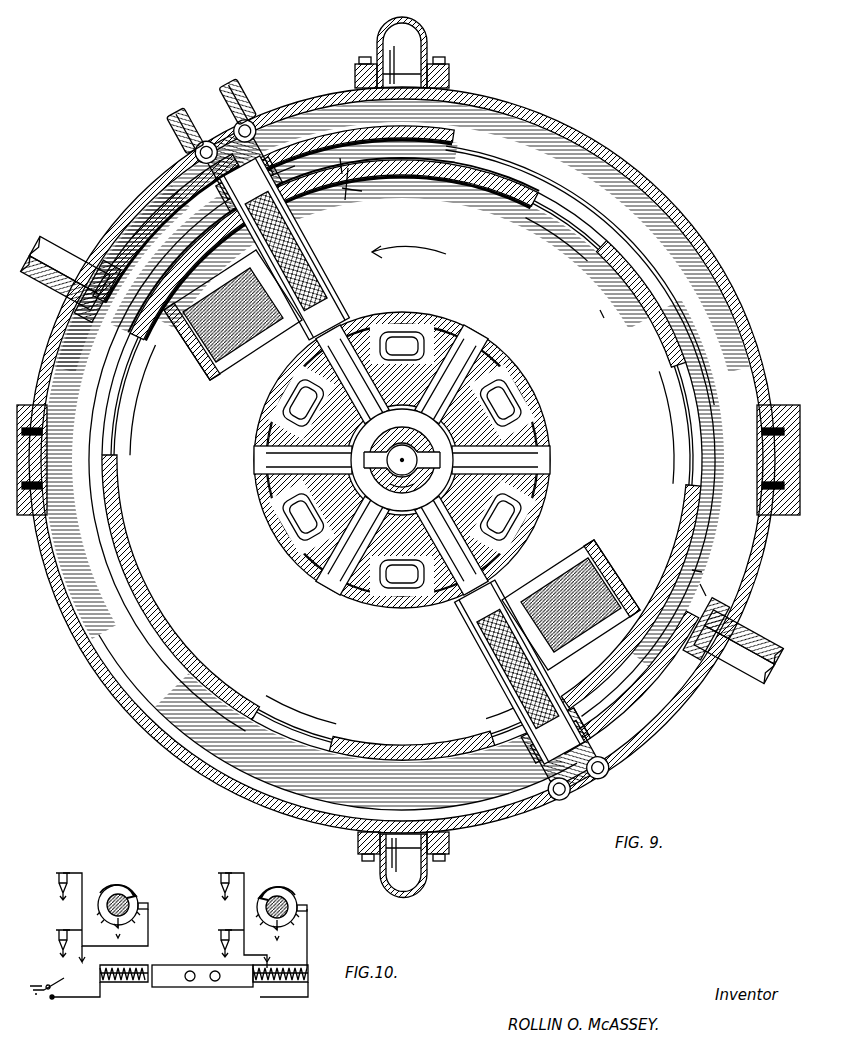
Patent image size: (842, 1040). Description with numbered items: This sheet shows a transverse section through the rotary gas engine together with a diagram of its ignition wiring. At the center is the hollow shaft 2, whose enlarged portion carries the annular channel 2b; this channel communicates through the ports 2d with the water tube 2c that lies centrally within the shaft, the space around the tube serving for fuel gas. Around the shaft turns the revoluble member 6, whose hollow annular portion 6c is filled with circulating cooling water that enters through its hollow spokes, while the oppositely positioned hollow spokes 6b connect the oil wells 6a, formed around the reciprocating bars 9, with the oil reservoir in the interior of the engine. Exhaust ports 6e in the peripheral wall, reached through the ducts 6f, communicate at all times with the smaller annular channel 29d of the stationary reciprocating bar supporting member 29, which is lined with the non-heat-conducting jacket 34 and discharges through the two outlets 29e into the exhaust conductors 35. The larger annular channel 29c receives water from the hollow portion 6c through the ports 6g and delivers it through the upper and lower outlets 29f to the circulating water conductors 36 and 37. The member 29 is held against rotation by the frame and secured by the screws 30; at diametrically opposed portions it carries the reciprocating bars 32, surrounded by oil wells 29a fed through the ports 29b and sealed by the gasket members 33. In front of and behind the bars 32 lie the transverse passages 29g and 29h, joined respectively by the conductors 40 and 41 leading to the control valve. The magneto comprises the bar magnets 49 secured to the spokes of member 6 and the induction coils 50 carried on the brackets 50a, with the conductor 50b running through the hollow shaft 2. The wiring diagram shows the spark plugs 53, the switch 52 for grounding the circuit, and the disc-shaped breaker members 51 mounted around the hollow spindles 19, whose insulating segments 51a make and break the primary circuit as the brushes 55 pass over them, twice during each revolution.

In FIG. 9, the hollow shaft 2 is at (399, 432).
In FIG. 9, the annular channel 2b is at (366, 452).
In FIG. 9, the water tube 2c is at (398, 482).
In FIG. 9, the ports 2d is at (428, 466).
In FIG. 9, the revoluble member 6 is at (640, 290).
In FIG. 9, the oil wells 6a is at (302, 236).
In FIG. 9, the hollow spokes 6b is at (348, 322).
In FIG. 9, the hollow annular portion 6c is at (590, 311).
In FIG. 9, the exhaust ports 6e is at (172, 300).
In FIG. 9, the ducts 6f is at (228, 350).
In FIG. 9, the ports 6g is at (590, 262).
In FIG. 9, the reciprocating bars 9 is at (312, 270).
In FIG. 10, the hollow spindles 19 is at (128, 902).
In FIG. 9, the reciprocating bar supporting member 29 is at (548, 120).
In FIG. 9, the oil wells 29a is at (232, 145).
In FIG. 9, the ports 29b is at (345, 176).
In FIG. 9, the annular channel 29c is at (397, 455).
In FIG. 9, the annular channel 29d is at (405, 140).
In FIG. 9, the outlets 29e is at (110, 250).
In FIG. 9, the outlets 29f is at (416, 78).
In FIG. 9, the transverse passages 29g is at (247, 128).
In FIG. 9, the transverse passages 29h is at (200, 156).
In FIG. 9, the screws 30 is at (762, 505).
In FIG. 9, the reciprocating bars 32 is at (258, 160).
In FIG. 9, the gasket members 33 is at (580, 736).
In FIG. 9, the non-heat-conducting jacket 34 is at (352, 172).
In FIG. 9, the exhaust conductors 35 is at (62, 244).
In FIG. 9, the circulating water conductor 36 is at (416, 40).
In FIG. 9, the circulating water conductor 37 is at (416, 884).
In FIG. 9, the conductor 40 is at (238, 86).
In FIG. 9, the conductor 41 is at (180, 116).
In FIG. 9, the bar magnets 49 is at (490, 352).
In FIG. 10, the bar magnets 49 is at (226, 988).
In FIG. 9, the induction coils 50 is at (500, 388).
In FIG. 10, the induction coils 50 is at (122, 984).
In FIG. 9, the brackets 50a is at (436, 318).
In FIG. 10, the conductor 50b is at (186, 990).
In FIG. 10, the breaker members 51 is at (106, 888).
In FIG. 10, the insulating segments 51a is at (130, 920).
In FIG. 10, the switch 52 is at (46, 992).
In FIG. 10, the spark plugs 53 is at (58, 884).
In FIG. 10, the brushes 55 is at (148, 907).